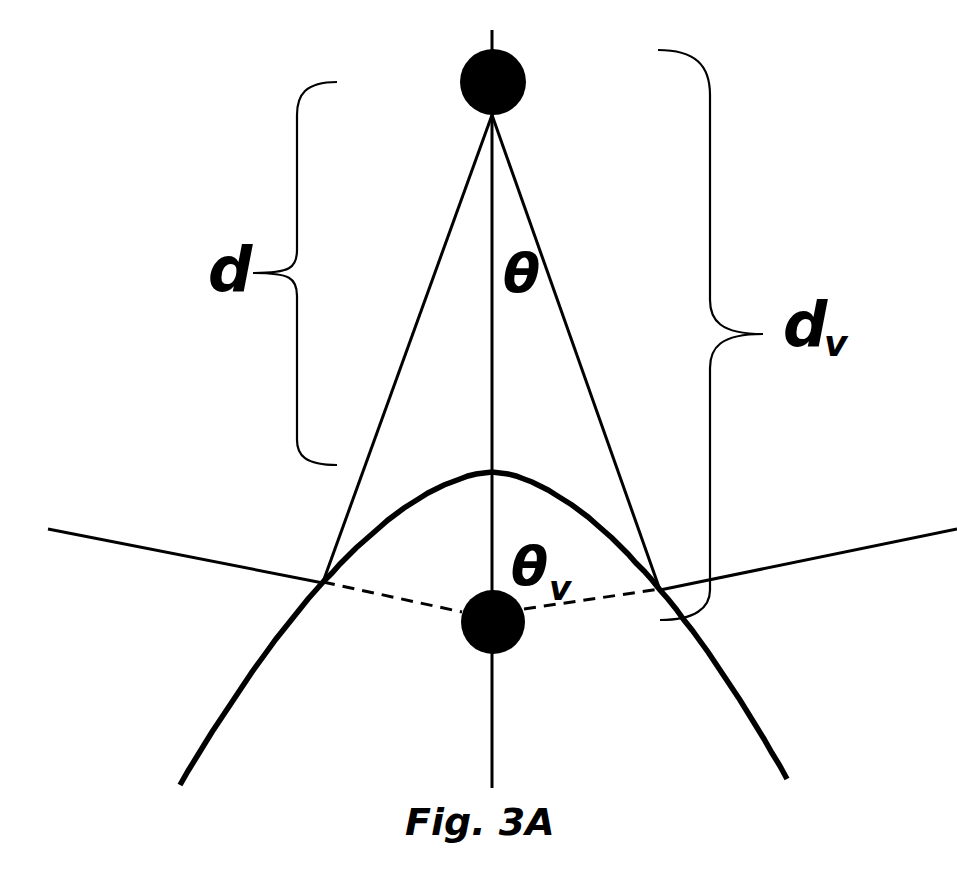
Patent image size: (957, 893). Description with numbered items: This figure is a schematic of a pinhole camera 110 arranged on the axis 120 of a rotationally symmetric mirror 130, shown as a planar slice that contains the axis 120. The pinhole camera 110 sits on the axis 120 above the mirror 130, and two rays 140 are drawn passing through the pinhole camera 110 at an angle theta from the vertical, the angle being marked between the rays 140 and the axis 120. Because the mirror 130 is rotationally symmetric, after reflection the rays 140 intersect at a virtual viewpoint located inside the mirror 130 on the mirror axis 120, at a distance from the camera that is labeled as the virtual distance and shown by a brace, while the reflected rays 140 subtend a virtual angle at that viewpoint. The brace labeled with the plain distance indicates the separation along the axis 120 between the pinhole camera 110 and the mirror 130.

The pinhole camera 110 is at (498, 52).
The axis 120 is at (490, 744).
The rotationally symmetric mirror 130 is at (290, 620).
The rays 140 is at (575, 362).